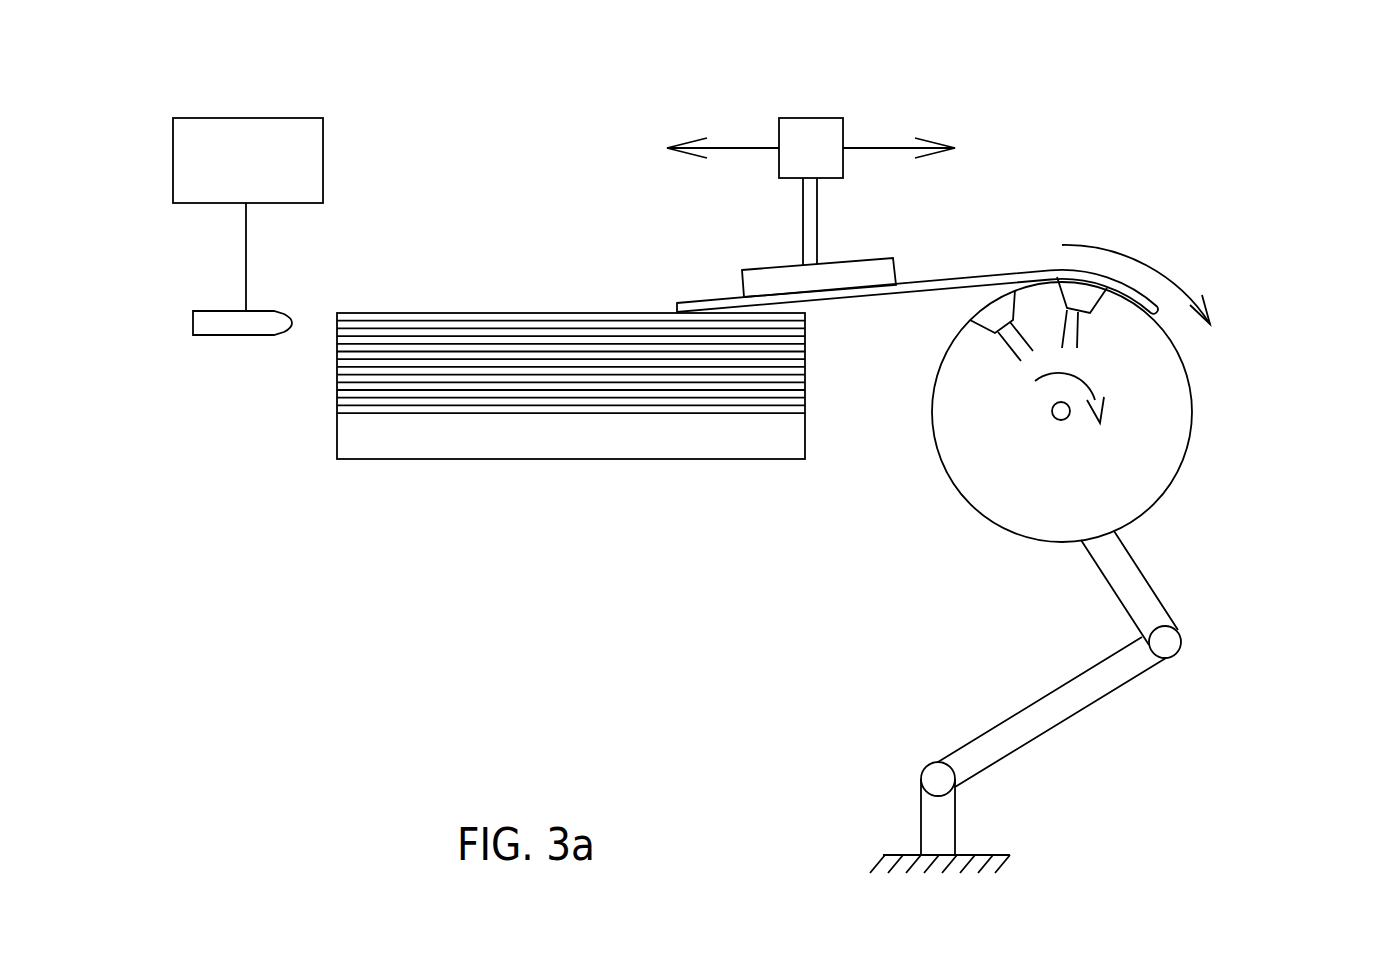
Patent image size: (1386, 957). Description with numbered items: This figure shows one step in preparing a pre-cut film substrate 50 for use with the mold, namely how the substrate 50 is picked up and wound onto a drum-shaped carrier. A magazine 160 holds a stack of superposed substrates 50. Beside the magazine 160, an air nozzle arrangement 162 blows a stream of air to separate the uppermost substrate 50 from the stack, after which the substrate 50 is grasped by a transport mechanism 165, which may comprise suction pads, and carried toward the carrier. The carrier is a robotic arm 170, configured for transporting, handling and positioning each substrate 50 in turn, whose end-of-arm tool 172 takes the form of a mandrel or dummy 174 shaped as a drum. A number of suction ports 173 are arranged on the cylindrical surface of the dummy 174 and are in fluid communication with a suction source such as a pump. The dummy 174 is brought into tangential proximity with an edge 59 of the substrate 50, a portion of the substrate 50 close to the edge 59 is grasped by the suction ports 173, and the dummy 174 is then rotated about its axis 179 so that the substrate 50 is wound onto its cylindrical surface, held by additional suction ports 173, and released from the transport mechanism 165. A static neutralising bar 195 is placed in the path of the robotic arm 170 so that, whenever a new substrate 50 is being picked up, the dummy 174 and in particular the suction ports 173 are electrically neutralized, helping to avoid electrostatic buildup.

The substrate 50 is at (930, 285).
The edge 59 is at (1153, 302).
The magazine 160 is at (552, 435).
The air nozzle arrangement 162 is at (225, 338).
The transport mechanism 165 is at (748, 114).
The robotic arm 170 is at (1147, 603).
The end-of-arm tool 172 is at (1145, 432).
The suction ports 173 is at (993, 318).
The dummy 174 is at (1038, 497).
The axis 179 is at (1067, 418).
The static neutralising bar 195 is at (270, 180).